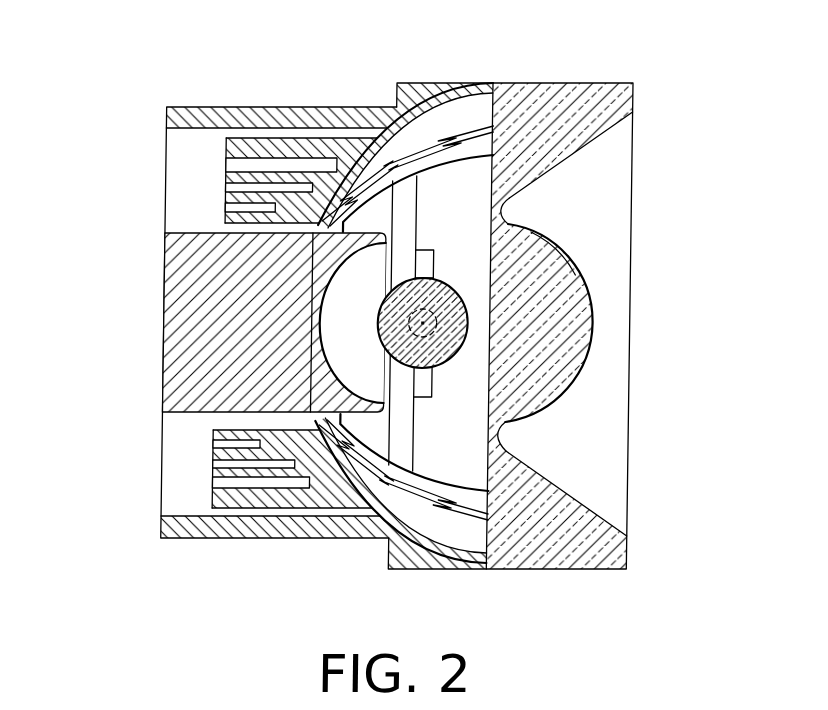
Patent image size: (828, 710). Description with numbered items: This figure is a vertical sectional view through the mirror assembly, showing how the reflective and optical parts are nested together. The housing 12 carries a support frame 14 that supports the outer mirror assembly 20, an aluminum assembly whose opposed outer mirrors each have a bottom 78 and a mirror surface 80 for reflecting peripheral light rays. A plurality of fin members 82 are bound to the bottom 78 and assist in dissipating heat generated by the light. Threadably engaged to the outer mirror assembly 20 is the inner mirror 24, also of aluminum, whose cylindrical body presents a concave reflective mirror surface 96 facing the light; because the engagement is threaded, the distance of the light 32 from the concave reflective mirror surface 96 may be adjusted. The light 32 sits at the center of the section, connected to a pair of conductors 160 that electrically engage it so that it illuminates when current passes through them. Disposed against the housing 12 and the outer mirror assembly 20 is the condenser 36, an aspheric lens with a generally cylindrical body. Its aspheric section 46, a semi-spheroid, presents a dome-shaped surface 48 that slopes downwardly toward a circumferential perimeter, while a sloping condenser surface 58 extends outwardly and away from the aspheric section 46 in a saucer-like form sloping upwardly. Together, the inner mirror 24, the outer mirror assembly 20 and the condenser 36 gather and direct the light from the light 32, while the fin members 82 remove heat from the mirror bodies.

The housing 12 is at (223, 100).
The support frame 14 is at (408, 440).
The outer mirror assembly 20 is at (438, 182).
The inner mirror 24 is at (207, 348).
The light 32 is at (461, 303).
The condenser 36 is at (650, 522).
The aspheric section 46 is at (568, 282).
The dome-shaped surface 48 is at (556, 243).
The sloping condenser surface 58 is at (633, 122).
The bottom 78 is at (461, 118).
The mirror surface 80 is at (458, 97).
The fin members 82 is at (236, 150).
The concave reflective mirror surface 96 is at (369, 311).
The conductors 160 is at (447, 362).